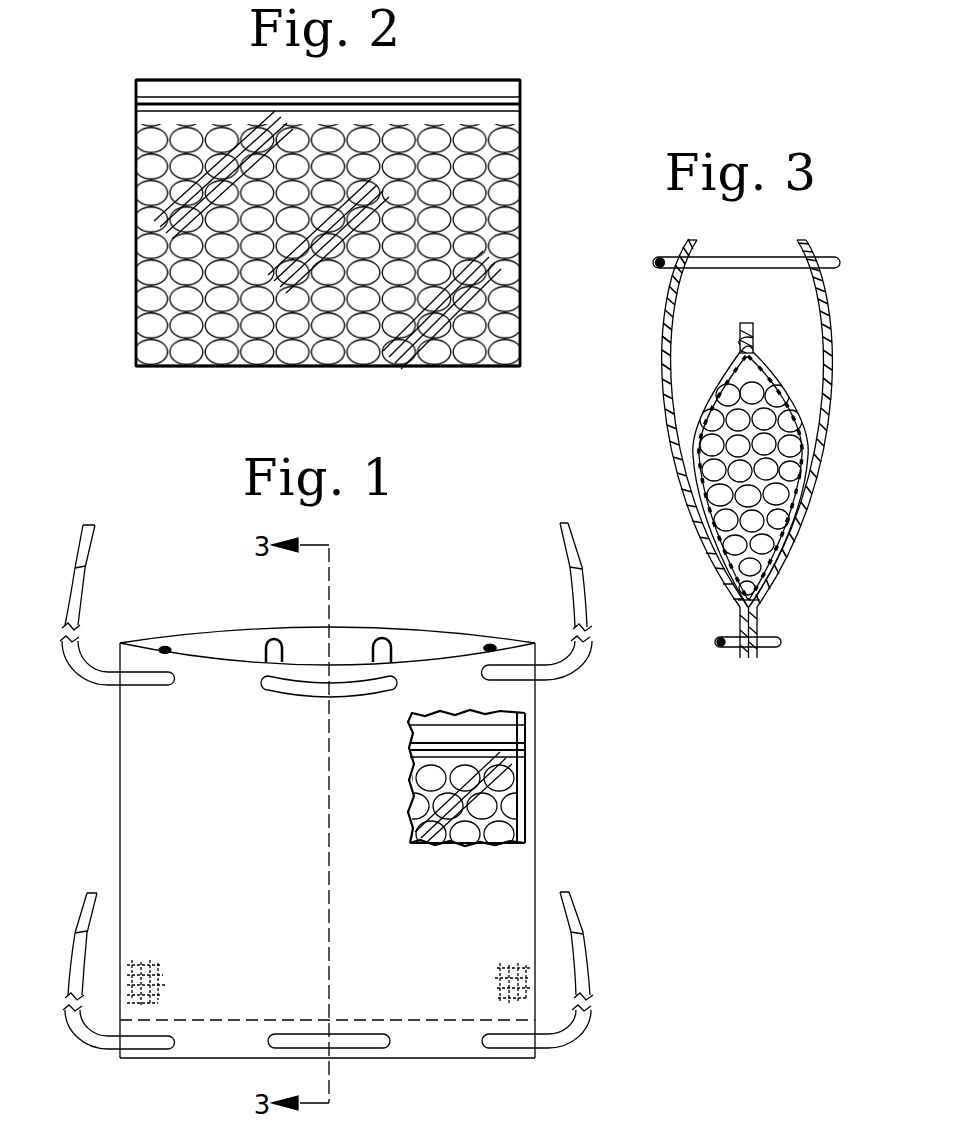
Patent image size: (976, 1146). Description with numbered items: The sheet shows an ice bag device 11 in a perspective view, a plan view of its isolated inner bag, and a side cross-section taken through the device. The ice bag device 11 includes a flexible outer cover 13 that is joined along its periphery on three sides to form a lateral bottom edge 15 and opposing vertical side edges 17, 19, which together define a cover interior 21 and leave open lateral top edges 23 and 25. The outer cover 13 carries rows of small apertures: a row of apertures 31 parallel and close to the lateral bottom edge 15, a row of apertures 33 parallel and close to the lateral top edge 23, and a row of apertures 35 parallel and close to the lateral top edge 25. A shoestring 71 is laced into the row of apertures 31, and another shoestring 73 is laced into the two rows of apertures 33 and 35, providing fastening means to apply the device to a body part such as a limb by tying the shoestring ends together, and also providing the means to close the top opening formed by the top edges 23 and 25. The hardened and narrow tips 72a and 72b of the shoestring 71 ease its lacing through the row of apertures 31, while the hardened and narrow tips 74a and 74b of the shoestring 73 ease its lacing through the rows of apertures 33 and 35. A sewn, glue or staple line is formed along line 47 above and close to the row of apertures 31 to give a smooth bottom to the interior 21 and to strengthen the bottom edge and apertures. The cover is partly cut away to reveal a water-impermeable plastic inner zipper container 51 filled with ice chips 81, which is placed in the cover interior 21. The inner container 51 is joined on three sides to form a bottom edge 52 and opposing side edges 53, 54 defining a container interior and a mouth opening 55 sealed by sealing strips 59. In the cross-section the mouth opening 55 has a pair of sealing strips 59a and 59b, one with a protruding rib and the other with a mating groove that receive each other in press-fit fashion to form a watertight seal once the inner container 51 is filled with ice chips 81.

In FIG. 3, the ice bag device 11 is at (711, 456).
In FIG. 1, the ice bag device 11 is at (321, 844).
In FIG. 3, the flexible outer cover 13 is at (711, 456).
In FIG. 1, the flexible outer cover 13 is at (321, 844).
In FIG. 3, the lateral bottom edge 15 is at (750, 660).
In FIG. 1, the lateral bottom edge 15 is at (150, 1060).
In FIG. 1, the vertical side edge 17 is at (120, 806).
In FIG. 1, the vertical side edge 19 is at (540, 858).
In FIG. 3, the cover interior 21 is at (695, 317).
In FIG. 1, the cover interior 21 is at (340, 652).
In FIG. 3, the lateral top edge 23 is at (690, 238).
In FIG. 1, the lateral top edge 23 is at (508, 645).
In FIG. 3, the lateral top edge 25 is at (804, 238).
In FIG. 1, the lateral top edge 25 is at (280, 641).
In FIG. 1, the row of apertures 31 is at (240, 1042).
In FIG. 1, the row of apertures 33 is at (255, 684).
In FIG. 1, the row of apertures 35 is at (164, 645).
In FIG. 3, the stitched line 47 is at (765, 610).
In FIG. 1, the stitched line 47 is at (404, 1020).
In FIG. 2, the inner zipper container 51 is at (118, 126).
In FIG. 3, the inner zipper container 51 is at (721, 442).
In FIG. 1, the inner zipper container 51 is at (512, 756).
In FIG. 2, the bottom edge 52 is at (432, 368).
In FIG. 2, the side edge 53 is at (136, 302).
In FIG. 2, the side edge 54 is at (520, 232).
In FIG. 2, the mouth opening 55 is at (198, 78).
In FIG. 3, the mouth opening 55 is at (742, 327).
In FIG. 2, the sealing strips 59 is at (443, 98).
In FIG. 3, the sealing strip 59a is at (757, 350).
In FIG. 3, the sealing strip 59b is at (742, 350).
In FIG. 3, the shoestring 71 is at (781, 640).
In FIG. 1, the shoestring 71 is at (349, 969).
In FIG. 1, the hardened narrow tip 72a is at (135, 969).
In FIG. 1, the hardened narrow tip 72b is at (577, 905).
In FIG. 3, the shoestring 73 is at (763, 257).
In FIG. 1, the shoestring 73 is at (340, 600).
In FIG. 1, the hardened narrow tip 74a is at (142, 598).
In FIG. 1, the hardened narrow tip 74b is at (561, 540).
In FIG. 2, the ice chips 81 is at (477, 167).
In FIG. 3, the ice chips 81 is at (762, 530).
In FIG. 1, the ice chips 81 is at (503, 787).